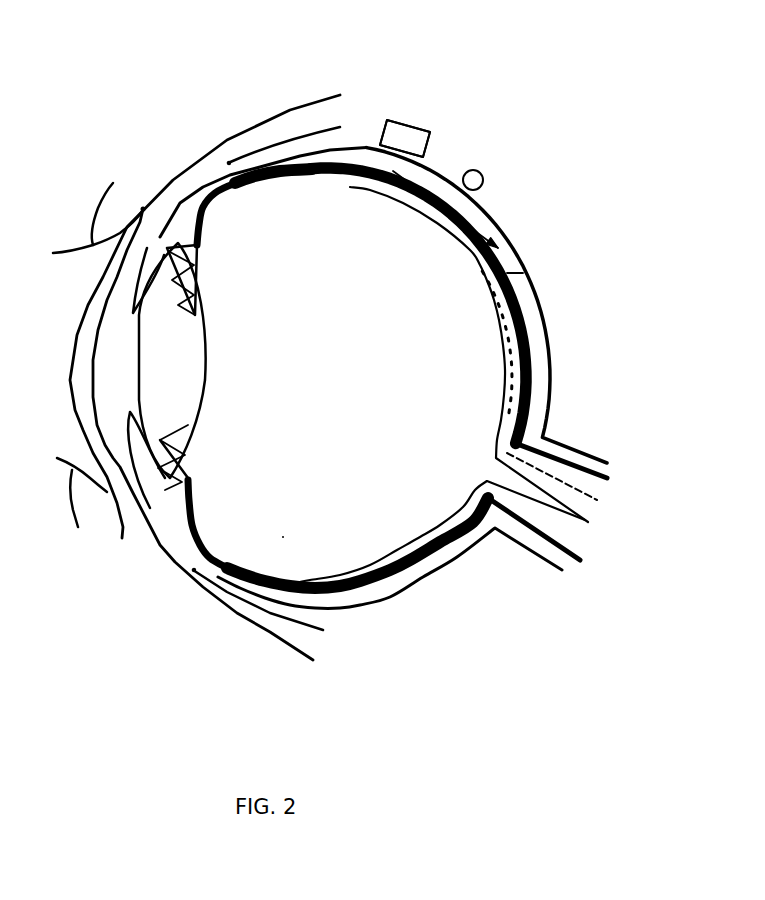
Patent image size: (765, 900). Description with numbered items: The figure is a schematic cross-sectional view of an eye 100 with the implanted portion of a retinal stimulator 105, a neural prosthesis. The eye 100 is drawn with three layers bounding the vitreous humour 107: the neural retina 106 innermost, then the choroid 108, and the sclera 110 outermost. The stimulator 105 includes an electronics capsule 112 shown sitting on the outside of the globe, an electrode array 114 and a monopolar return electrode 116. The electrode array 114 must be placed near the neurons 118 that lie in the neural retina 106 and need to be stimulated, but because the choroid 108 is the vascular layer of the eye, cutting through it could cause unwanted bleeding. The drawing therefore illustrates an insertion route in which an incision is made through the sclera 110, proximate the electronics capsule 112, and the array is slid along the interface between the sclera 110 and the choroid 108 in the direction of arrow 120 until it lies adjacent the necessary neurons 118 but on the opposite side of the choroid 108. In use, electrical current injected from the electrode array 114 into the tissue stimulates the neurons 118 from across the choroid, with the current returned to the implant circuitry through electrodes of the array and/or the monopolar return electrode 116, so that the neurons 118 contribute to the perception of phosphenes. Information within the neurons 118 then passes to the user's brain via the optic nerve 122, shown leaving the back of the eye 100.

The eye 100 is at (140, 162).
The retinal stimulator 105 is at (385, 113).
The neural retina 106 is at (470, 547).
The vitreous humour 107 is at (283, 537).
The choroid 108 is at (420, 570).
The sclera 110 is at (357, 595).
The electronics capsule 112 is at (430, 132).
The electrode array 114 is at (523, 273).
The monopolar return electrode 116 is at (483, 180).
The neurons 118 is at (476, 294).
The arrow 120 is at (478, 228).
The optic nerve 122 is at (593, 520).